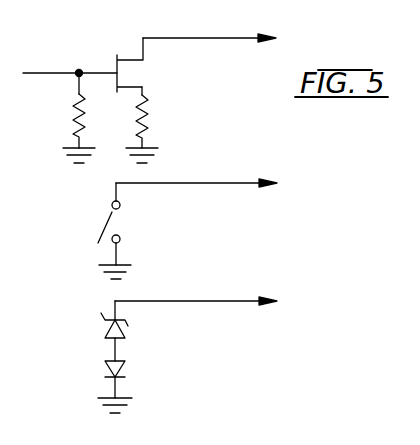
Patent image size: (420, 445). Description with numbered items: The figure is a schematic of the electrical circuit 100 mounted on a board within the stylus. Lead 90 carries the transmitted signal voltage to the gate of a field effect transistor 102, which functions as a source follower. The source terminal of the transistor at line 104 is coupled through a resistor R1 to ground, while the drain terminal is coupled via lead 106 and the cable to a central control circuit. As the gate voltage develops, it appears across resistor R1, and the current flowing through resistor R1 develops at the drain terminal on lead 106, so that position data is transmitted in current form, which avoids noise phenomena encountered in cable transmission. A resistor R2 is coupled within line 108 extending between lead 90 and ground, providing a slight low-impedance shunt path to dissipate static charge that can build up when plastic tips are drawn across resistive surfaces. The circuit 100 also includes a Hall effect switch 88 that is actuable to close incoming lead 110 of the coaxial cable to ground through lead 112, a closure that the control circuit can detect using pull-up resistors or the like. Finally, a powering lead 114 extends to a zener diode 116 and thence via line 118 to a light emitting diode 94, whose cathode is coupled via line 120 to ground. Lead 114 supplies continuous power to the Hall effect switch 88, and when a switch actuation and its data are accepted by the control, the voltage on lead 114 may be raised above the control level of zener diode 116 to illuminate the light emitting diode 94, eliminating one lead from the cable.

The circuit 100 is at (373, 153).
The field effect transistor 102 is at (127, 58).
The lead 90 is at (58, 71).
The lead 106 is at (145, 49).
The line 108 is at (78, 85).
The resistor R2 is at (73, 115).
The line 104 is at (142, 89).
The resistor R1 is at (150, 115).
The incoming lead 110 is at (193, 183).
The Hall effect switch 88 is at (107, 223).
The lead 112 is at (117, 252).
The powering lead 114 is at (198, 301).
The zener diode 116 is at (105, 334).
The line 118 is at (114, 351).
The light emitting diode 94 is at (125, 366).
The line 120 is at (115, 389).